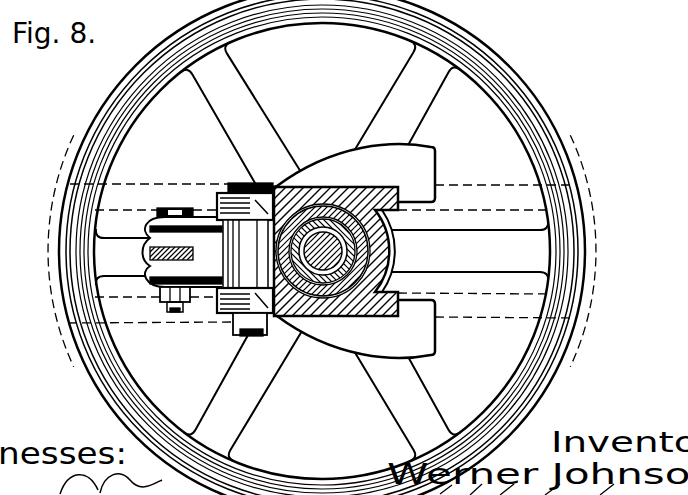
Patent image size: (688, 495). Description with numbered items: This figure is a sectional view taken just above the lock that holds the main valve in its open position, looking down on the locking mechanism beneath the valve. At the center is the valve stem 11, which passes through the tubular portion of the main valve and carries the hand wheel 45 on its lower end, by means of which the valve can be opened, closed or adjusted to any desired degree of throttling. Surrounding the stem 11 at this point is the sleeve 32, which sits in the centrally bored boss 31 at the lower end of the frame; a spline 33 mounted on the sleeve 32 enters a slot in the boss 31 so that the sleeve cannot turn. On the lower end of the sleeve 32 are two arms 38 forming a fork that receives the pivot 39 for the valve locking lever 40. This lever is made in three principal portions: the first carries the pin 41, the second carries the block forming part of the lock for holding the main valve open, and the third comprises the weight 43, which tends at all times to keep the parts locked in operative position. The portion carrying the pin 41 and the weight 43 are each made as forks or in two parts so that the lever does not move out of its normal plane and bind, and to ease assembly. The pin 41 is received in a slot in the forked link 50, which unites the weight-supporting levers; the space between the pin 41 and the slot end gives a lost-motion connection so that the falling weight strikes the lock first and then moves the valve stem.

The stem 11 is at (362, 251).
The boss 31 is at (357, 244).
The sleeve 32 is at (361, 248).
The spline 33 is at (380, 248).
The arms 38 is at (207, 224).
The pivot 39 is at (248, 336).
The valve locking lever 40 is at (242, 183).
The pin 41 is at (173, 310).
The weight 43 is at (427, 161).
The hand wheel 45 is at (585, 249).
The forked link 50 is at (146, 226).